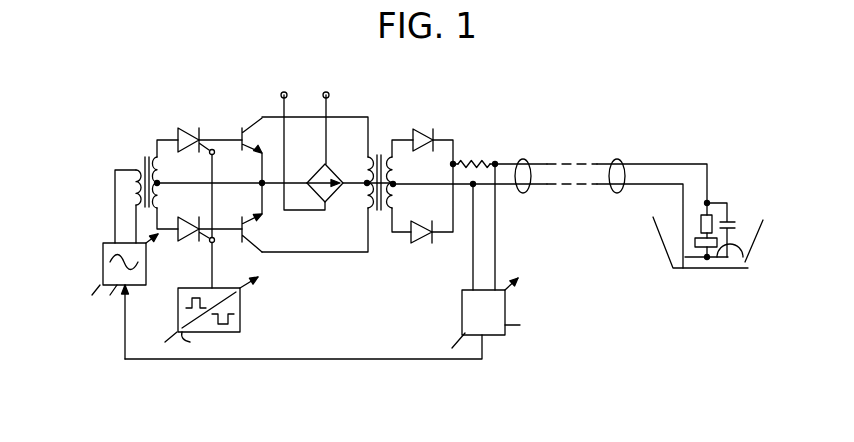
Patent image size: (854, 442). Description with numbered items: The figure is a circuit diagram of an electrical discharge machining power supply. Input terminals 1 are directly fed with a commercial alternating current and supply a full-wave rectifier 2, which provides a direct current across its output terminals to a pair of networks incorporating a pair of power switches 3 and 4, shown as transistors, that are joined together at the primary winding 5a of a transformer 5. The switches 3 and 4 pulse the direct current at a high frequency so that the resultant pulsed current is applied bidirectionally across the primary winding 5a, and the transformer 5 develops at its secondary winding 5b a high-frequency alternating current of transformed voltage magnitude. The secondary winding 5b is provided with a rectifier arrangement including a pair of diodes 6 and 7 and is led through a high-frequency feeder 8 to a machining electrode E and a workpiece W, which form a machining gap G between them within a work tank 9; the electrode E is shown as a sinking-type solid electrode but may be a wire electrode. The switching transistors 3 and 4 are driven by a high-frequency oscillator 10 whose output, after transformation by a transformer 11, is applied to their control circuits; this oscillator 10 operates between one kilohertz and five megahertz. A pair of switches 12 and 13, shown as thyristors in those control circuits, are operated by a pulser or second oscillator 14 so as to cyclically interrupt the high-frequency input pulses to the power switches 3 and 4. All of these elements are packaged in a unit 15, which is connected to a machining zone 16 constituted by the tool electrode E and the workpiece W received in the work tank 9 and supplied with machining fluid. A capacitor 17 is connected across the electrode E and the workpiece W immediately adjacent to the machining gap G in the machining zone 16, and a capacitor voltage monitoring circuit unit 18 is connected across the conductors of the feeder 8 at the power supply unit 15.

The input terminals 1 is at (303, 94).
The full-wave rectifier 2 is at (315, 172).
The power switch 3 is at (243, 127).
The power switch 4 is at (258, 231).
The transformer 5 is at (378, 155).
The primary winding 5a is at (370, 171).
The secondary winding 5b is at (393, 187).
The diode 6 is at (436, 137).
The diode 7 is at (422, 244).
The high-frequency feeder 8 is at (597, 160).
The work tank 9 is at (655, 243).
The high-frequency oscillator 10 is at (146, 265).
The transformer 11 is at (144, 159).
The switch 12 is at (188, 120).
The switch 13 is at (198, 217).
The second oscillator 14 is at (240, 318).
The unit 15 is at (348, 327).
The machining zone 16 is at (701, 194).
The capacitor 17 is at (738, 222).
The capacitor voltage monitoring circuit unit 18 is at (462, 305).
The machining electrode E is at (698, 221).
The workpiece W is at (688, 266).
The machining gap G is at (744, 255).